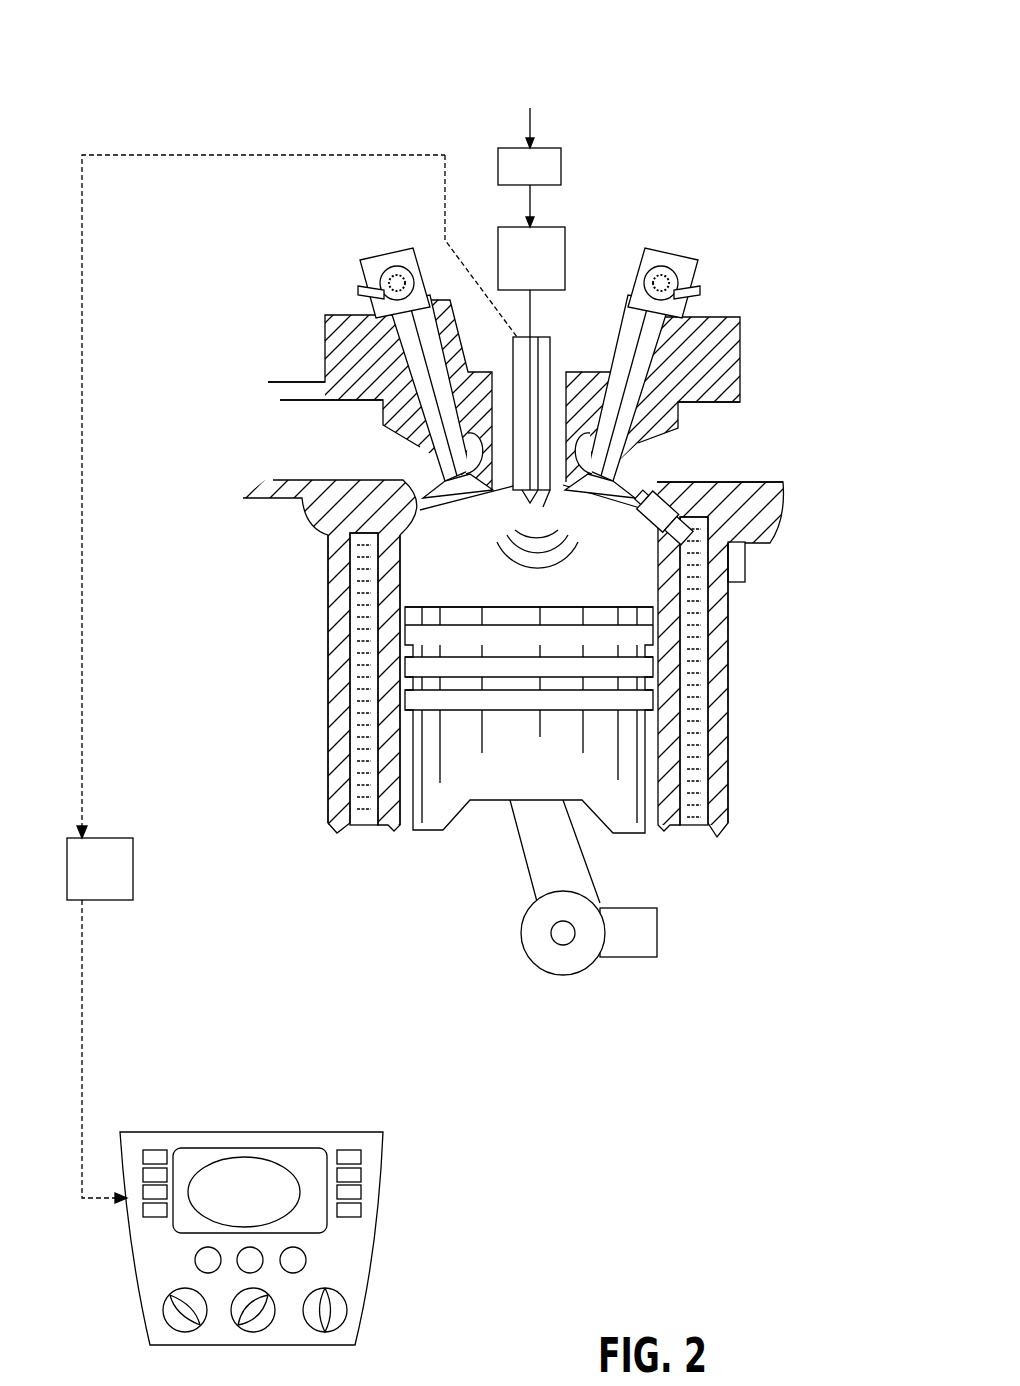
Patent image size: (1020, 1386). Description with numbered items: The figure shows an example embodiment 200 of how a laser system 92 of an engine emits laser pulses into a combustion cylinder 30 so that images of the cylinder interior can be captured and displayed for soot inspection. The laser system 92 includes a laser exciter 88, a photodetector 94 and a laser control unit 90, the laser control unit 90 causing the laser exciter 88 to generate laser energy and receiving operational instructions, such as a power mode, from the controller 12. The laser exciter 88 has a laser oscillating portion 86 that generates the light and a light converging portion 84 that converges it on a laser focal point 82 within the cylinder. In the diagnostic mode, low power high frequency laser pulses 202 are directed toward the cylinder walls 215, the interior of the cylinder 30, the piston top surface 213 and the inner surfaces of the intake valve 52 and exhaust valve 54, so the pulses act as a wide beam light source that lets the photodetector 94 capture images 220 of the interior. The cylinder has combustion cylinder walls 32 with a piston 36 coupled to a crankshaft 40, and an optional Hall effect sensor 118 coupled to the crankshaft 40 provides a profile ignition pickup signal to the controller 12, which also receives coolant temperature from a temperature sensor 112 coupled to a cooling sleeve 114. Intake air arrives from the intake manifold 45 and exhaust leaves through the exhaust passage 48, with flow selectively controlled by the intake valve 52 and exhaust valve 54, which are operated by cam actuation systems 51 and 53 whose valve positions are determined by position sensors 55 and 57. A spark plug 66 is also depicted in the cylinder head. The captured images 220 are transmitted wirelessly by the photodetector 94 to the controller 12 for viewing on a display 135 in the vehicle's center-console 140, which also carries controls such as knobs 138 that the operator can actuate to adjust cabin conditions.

The example embodiment 200 is at (255, 62).
The laser system 92 is at (473, 145).
The laser control unit 90 is at (529, 166).
The laser oscillating portion 86 is at (531, 258).
The laser exciter 88 is at (538, 337).
The photodetector 94 is at (511, 380).
The light converging portion 84 is at (563, 483).
The laser focal point 82 is at (527, 487).
The laser pulses 202 is at (568, 553).
The cam actuation system 53 is at (413, 248).
The position sensor 57 is at (358, 291).
The cam actuation system 51 is at (647, 247).
The position sensor 55 is at (698, 291).
The exhaust valve 54 is at (447, 470).
The intake valve 52 is at (618, 472).
The exhaust passage 48 is at (325, 420).
The intake manifold 45 is at (720, 442).
The spark plug 66 is at (683, 500).
The combustion cylinder 30 is at (435, 525).
The cylinder walls 215 is at (400, 590).
The piston top surface 213 is at (517, 607).
The combustion cylinder walls 32 is at (387, 827).
The piston 36 is at (462, 813).
The crankshaft 40 is at (545, 968).
The Hall effect sensor 118 is at (627, 958).
The temperature sensor 112 is at (750, 583).
The cooling sleeve 114 is at (693, 750).
The controller 12 is at (114, 882).
The center-console 140 is at (393, 1127).
The display 135 is at (263, 1148).
The images 220 is at (218, 1190).
The knobs 138 is at (300, 1262).